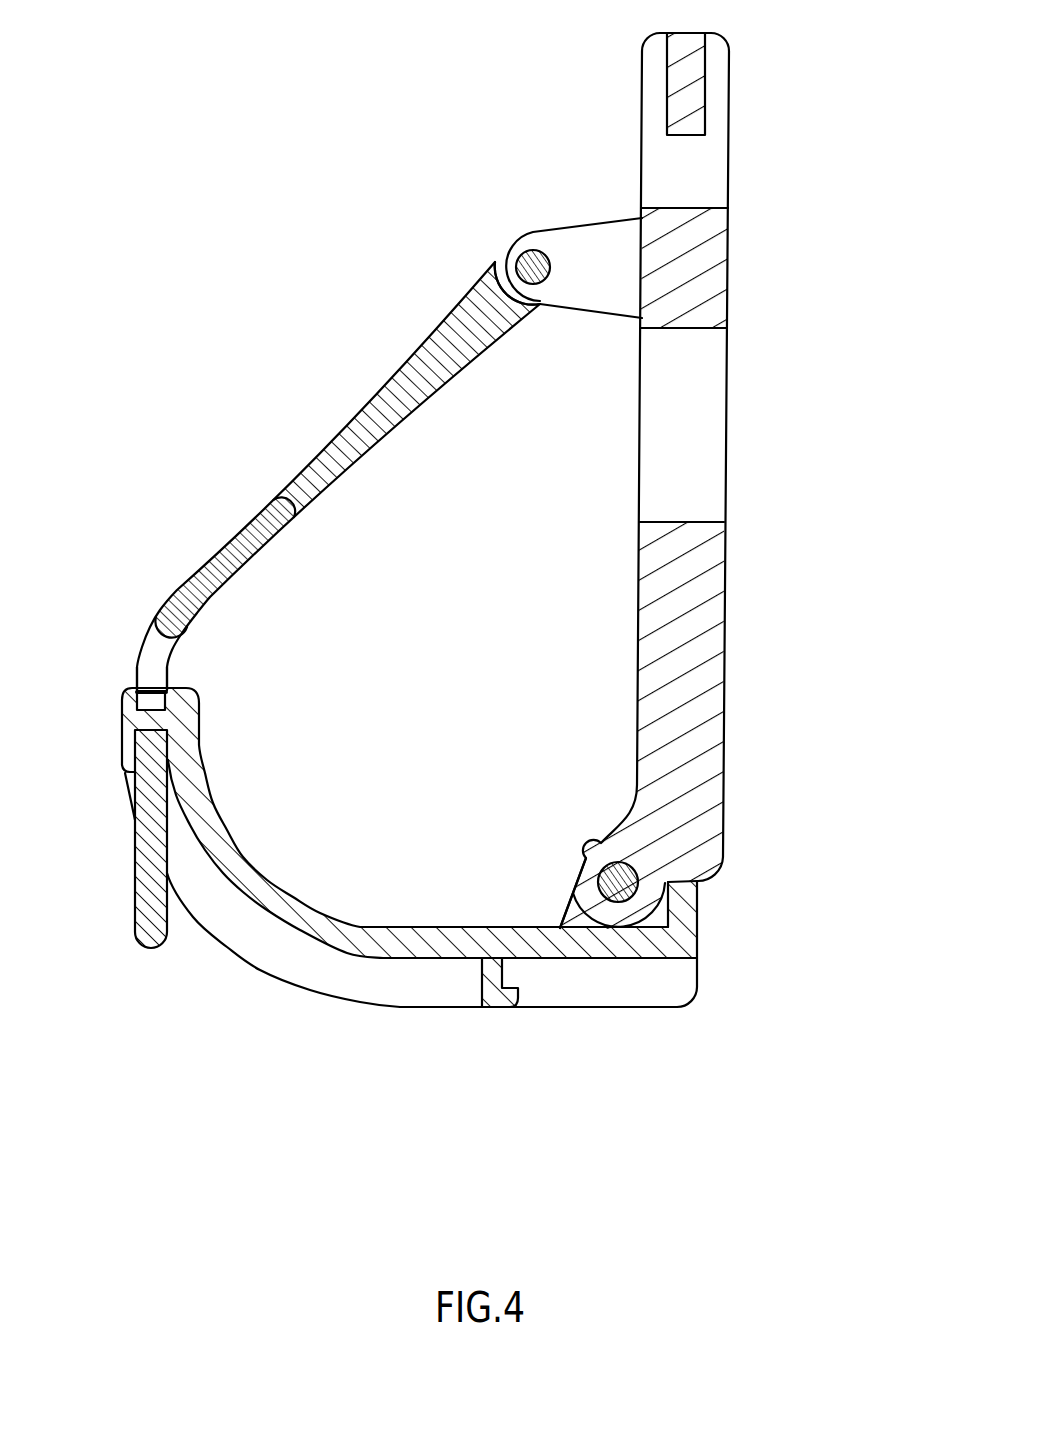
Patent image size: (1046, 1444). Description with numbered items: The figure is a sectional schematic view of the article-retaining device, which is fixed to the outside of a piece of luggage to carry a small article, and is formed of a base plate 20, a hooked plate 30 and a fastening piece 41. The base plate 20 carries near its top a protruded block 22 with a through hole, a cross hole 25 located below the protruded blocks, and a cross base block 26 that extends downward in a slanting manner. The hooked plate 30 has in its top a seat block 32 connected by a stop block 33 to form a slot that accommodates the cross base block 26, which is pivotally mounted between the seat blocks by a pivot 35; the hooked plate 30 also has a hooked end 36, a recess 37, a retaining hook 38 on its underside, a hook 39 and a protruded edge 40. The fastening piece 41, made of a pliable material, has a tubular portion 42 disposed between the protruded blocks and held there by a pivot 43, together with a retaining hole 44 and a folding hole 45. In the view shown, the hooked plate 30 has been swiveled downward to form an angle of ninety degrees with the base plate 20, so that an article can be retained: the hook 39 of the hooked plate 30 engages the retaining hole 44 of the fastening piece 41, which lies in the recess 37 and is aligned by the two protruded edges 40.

The base plate 20 is at (728, 48).
The protruded block 22 is at (595, 243).
The cross hole 25 is at (727, 425).
The cross base block 26 is at (622, 912).
The hooked plate 30 is at (321, 933).
The seat block 32 is at (575, 912).
The stop block 33 is at (684, 905).
The pivot 35 is at (604, 901).
The hooked end 36 is at (190, 698).
The recess 37 is at (232, 920).
The retaining hook 38 is at (507, 1001).
The hook 39 is at (128, 708).
The protruded edge 40 is at (126, 757).
The fastening piece 41 is at (408, 397).
The tubular portion 42 is at (496, 262).
The pivot 43 is at (530, 258).
The retaining hole 44 is at (148, 665).
The folding hole 45 is at (257, 520).